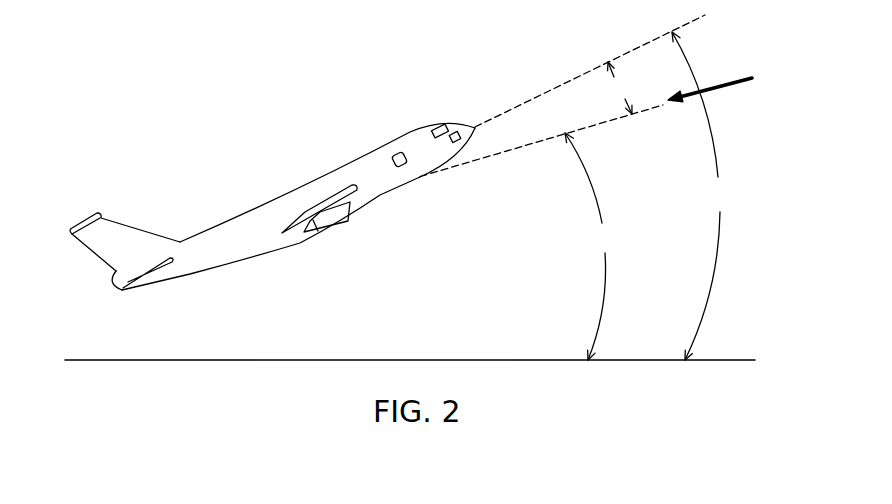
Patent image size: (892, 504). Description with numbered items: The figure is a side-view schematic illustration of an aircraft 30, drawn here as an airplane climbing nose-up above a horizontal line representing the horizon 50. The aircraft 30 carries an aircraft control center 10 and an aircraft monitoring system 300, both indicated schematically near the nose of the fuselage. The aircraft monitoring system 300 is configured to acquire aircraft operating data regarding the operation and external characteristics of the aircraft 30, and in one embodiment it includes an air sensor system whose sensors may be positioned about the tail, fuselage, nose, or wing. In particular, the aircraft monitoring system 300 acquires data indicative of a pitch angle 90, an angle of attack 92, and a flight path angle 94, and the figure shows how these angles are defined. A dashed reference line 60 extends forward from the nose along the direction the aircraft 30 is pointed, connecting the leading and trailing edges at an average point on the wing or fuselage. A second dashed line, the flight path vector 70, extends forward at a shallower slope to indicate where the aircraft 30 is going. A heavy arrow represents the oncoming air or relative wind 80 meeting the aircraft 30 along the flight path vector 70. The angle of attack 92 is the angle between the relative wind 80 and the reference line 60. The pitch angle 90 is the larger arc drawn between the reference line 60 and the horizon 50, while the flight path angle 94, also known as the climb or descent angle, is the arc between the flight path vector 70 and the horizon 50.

The aircraft 30 is at (272, 206).
The aircraft control center 10 is at (445, 126).
The aircraft monitoring system 300 is at (457, 132).
The reference line 60 is at (592, 70).
The flight path vector 70 is at (507, 152).
The relative wind 80 is at (728, 89).
The angle of attack 92 is at (620, 88).
The pitch angle 90 is at (701, 196).
The flight path angle 94 is at (589, 246).
The horizon 50 is at (400, 358).